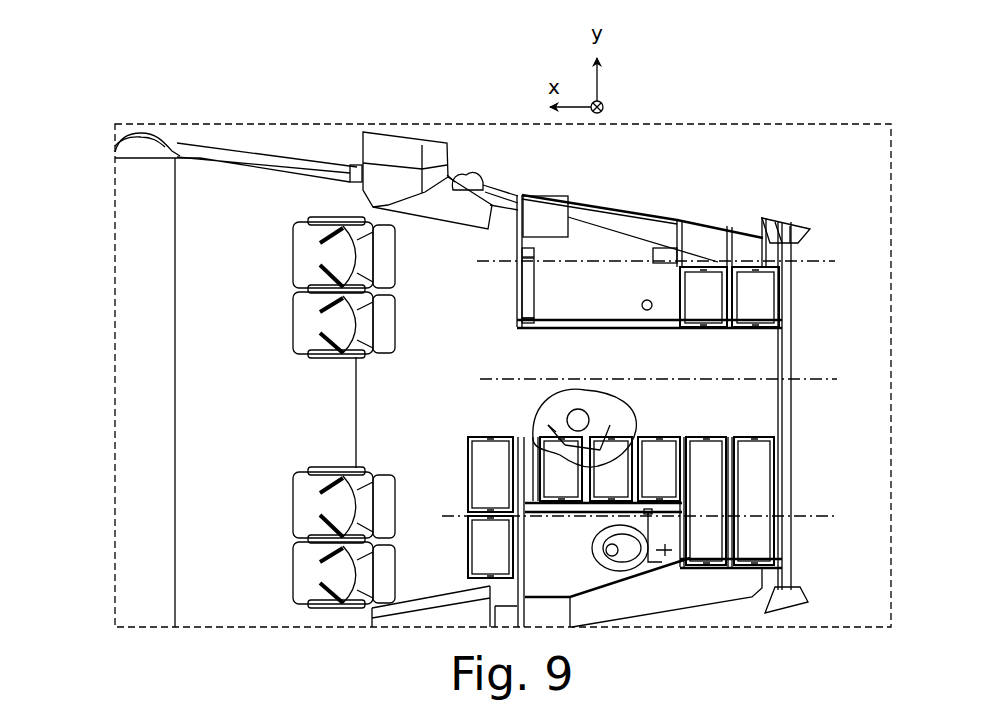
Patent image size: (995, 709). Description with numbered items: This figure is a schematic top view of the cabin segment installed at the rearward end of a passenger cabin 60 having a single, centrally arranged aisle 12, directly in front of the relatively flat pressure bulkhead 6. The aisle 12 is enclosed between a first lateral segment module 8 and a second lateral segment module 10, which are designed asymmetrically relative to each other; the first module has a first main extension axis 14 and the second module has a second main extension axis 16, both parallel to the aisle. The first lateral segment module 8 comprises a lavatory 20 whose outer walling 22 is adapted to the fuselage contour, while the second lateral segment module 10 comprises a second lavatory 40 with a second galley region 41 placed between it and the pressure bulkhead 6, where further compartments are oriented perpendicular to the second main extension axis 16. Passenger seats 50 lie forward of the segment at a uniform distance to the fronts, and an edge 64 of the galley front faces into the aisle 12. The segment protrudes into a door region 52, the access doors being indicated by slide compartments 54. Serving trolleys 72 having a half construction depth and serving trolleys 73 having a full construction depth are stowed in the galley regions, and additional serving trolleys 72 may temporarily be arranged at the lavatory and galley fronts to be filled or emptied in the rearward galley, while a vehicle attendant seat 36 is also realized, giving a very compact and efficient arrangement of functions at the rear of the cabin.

The pressure bulkhead 6 is at (777, 373).
The first lateral segment module 8 is at (820, 523).
The second lateral segment module 10 is at (803, 217).
The aisle 12 is at (615, 367).
The first main extension axis 14 is at (445, 516).
The second main extension axis 16 is at (477, 261).
The lavatory 20 is at (577, 562).
The outer walling 22 is at (710, 608).
The vehicle attendant seat 36 is at (528, 432).
The second lavatory 40 is at (603, 292).
The second galley region 41 is at (733, 210).
The passenger seats 50 is at (277, 252).
The door region 52 is at (400, 428).
The slide compartments 54 is at (468, 182).
The cabin 60 is at (243, 403).
The edge 64 is at (510, 333).
The serving trolleys having a half construction depth 72 is at (670, 487).
The serving trolleys having a full construction depth 73 is at (766, 489).